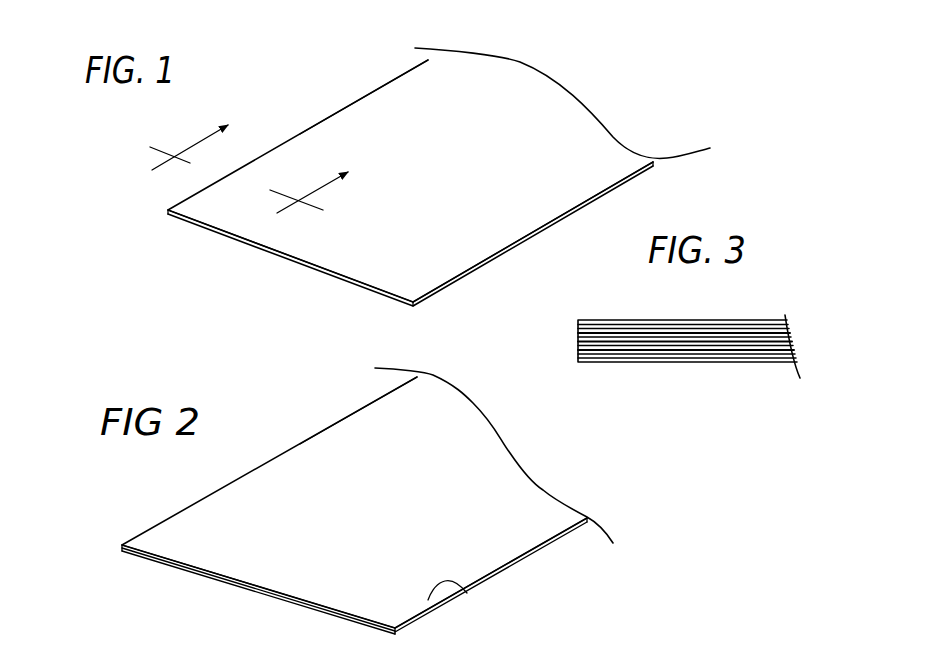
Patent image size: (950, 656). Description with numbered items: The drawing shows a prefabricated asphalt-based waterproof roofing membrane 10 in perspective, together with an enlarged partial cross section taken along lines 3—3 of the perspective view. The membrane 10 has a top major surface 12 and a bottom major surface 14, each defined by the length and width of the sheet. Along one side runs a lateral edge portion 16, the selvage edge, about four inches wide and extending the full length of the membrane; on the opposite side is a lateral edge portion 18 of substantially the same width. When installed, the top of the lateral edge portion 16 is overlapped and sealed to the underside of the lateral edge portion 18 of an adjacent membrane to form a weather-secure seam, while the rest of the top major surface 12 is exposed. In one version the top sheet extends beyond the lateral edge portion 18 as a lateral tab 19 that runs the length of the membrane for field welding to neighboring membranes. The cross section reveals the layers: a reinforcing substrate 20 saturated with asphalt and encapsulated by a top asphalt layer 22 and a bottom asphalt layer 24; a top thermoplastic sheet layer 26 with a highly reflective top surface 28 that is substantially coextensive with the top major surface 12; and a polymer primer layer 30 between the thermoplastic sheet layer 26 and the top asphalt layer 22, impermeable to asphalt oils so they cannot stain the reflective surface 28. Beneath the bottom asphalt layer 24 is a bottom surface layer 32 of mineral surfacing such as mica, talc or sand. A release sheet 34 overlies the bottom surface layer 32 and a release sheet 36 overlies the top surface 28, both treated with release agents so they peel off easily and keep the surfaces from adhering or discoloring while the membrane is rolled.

In FIG. 1, the prefabricated asphalt-based waterproof roofing membrane 10 is at (292, 77).
In FIG. 2, the prefabricated asphalt-based waterproof roofing membrane 10 is at (134, 485).
In FIG. 3, the prefabricated asphalt-based waterproof roofing membrane 10 is at (689, 346).
In FIG. 1, the top major surface 12 is at (455, 168).
In FIG. 2, the top major surface 12 is at (373, 511).
In FIG. 1, the bottom major surface 14 is at (307, 267).
In FIG. 2, the bottom major surface 14 is at (252, 595).
In FIG. 1, the lateral edge portion 16 is at (357, 111).
In FIG. 2, the lateral edge portion 16 is at (273, 475).
In FIG. 1, the lateral edge portion 18 is at (542, 212).
In FIG. 2, the lateral edge portion 18 is at (400, 563).
In FIG. 2, the lateral tab 19 is at (467, 593).
In FIG. 1, the section lines 3 is at (241, 177).
In FIG. 3, the reinforcing substrate 20 is at (578, 343).
In FIG. 3, the top asphalt layer 22 is at (578, 340).
In FIG. 3, the bottom asphalt layer 24 is at (578, 352).
In FIG. 3, the top thermoplastic sheet layer 26 is at (637, 332).
In FIG. 3, the highly reflective top surface 28 is at (697, 323).
In FIG. 3, the polymer primer layer 30 is at (733, 337).
In FIG. 3, the bottom surface layer 32 is at (660, 353).
In FIG. 3, the release film or sheet 34 is at (727, 362).
In FIG. 3, the release film or sheet 36 is at (615, 320).